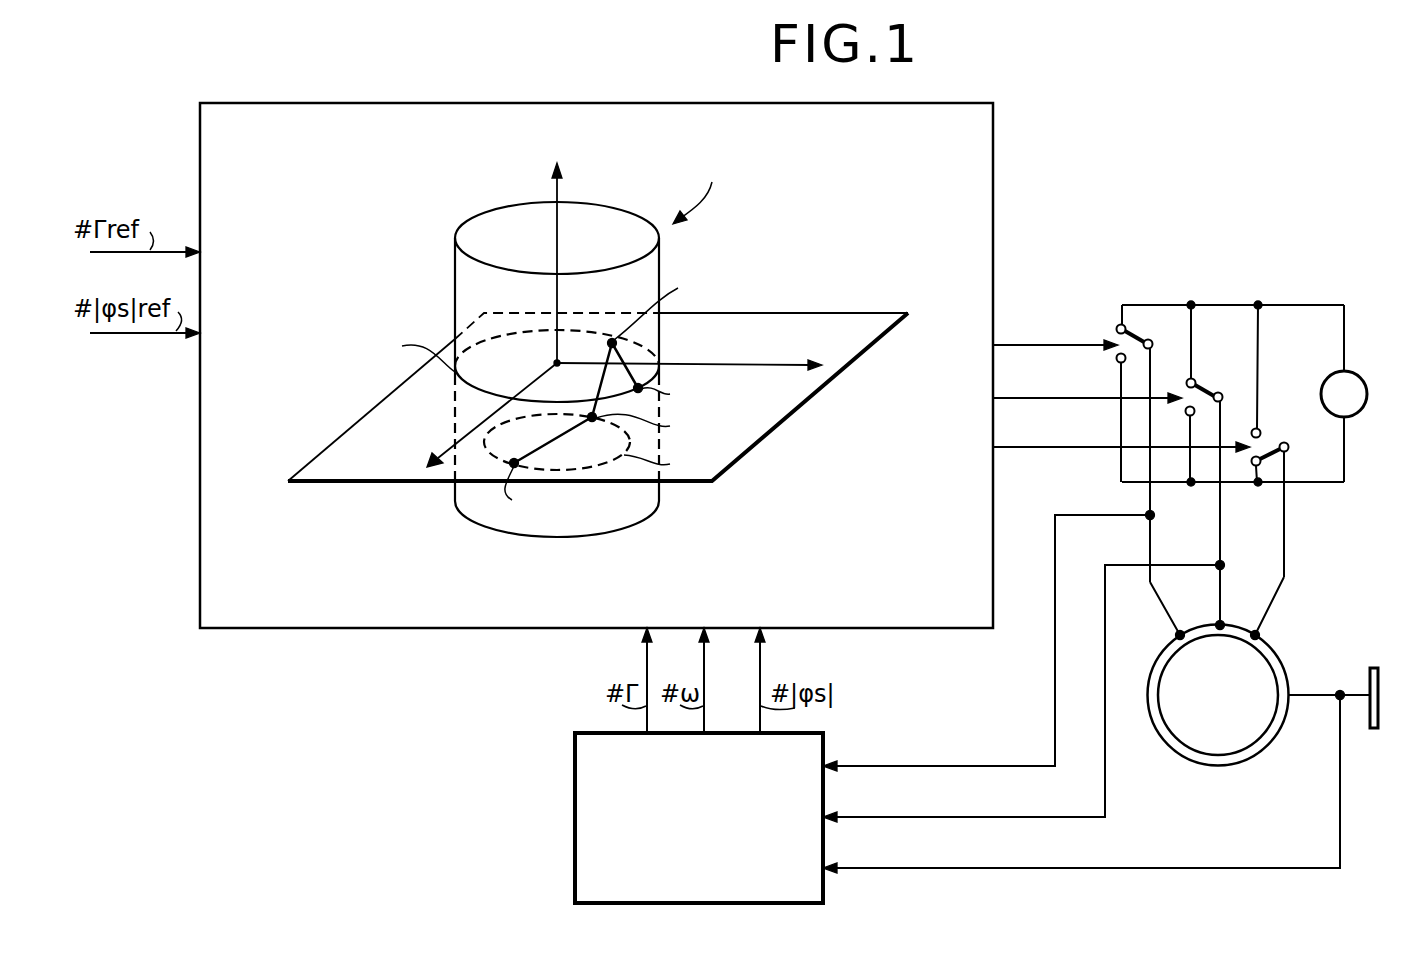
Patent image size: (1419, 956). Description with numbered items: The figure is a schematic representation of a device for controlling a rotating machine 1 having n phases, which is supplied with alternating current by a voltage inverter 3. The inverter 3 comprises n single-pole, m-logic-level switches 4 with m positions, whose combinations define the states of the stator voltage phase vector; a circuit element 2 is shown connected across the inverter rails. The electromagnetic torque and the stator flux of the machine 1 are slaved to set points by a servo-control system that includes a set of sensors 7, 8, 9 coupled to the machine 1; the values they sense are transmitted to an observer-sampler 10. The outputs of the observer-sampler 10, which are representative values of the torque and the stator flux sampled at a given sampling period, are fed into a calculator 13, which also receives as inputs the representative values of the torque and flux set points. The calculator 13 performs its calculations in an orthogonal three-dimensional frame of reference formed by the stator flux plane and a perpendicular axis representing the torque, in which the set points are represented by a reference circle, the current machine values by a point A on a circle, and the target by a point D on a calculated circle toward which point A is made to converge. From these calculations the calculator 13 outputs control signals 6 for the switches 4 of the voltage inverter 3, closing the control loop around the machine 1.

The rotating machine 1 is at (1221, 766).
The DC voltage source 2 is at (1362, 378).
The voltage inverter 3 is at (1231, 410).
The switches 4 is at (1142, 334).
The control signals 6 is at (1067, 447).
The sensor 7 is at (925, 764).
The sensor 8 is at (925, 815).
The sensor 9 is at (925, 866).
The observer-sampler 10 is at (575, 834).
The calculator 13 is at (452, 103).